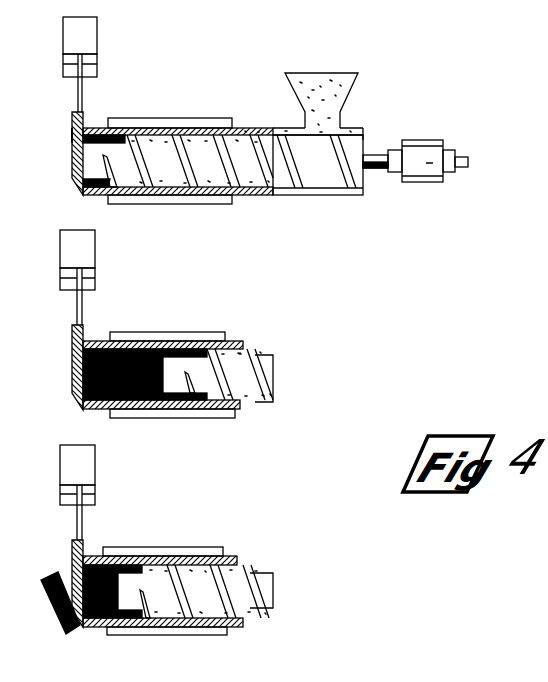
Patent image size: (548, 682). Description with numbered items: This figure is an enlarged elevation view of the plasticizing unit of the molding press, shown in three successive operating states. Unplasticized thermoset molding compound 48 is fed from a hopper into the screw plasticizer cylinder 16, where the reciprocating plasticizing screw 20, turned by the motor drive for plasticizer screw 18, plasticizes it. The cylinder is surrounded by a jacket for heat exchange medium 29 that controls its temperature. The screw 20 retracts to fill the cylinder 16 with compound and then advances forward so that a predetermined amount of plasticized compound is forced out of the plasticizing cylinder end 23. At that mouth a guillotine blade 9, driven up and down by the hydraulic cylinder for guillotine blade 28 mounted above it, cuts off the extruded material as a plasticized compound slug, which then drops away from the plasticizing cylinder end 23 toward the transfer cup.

The hydraulic cylinder for guillotine blade 28 is at (97, 40).
The plasticizing cylinder end 23 is at (85, 120).
The screw plasticizer cylinder 16 is at (143, 140).
The jacket for heat exchange medium 29 is at (222, 117).
The reciprocating plasticizing screw 20 is at (272, 153).
The guillotine blade 9 is at (72, 135).
The unplasticized thermoset molding compound 48 is at (332, 100).
The motor drive for plasticizer screw 18 is at (425, 140).